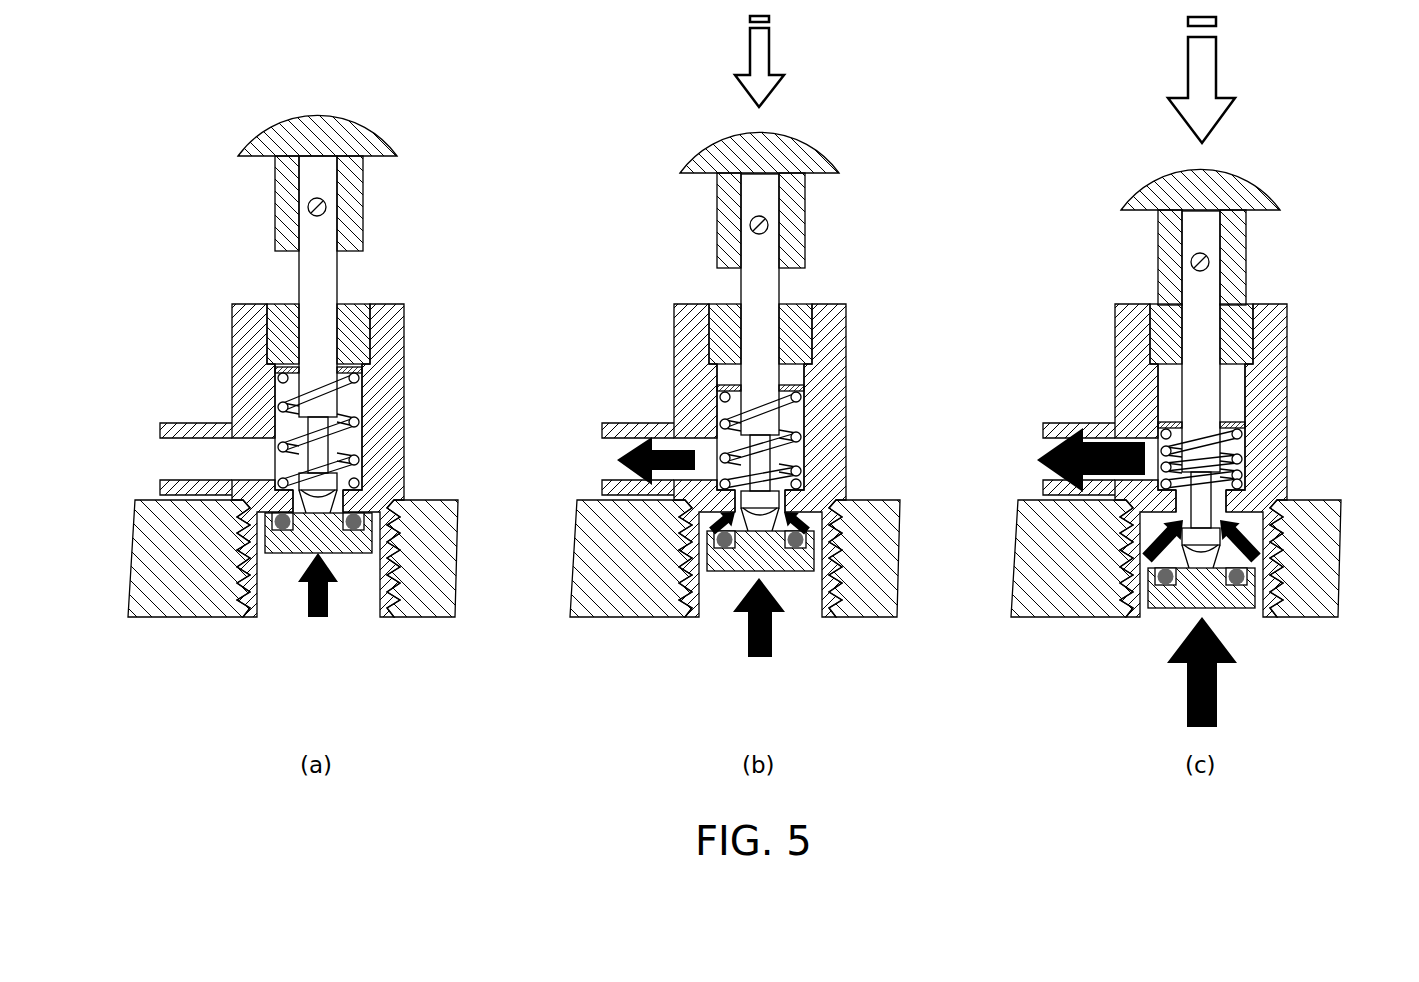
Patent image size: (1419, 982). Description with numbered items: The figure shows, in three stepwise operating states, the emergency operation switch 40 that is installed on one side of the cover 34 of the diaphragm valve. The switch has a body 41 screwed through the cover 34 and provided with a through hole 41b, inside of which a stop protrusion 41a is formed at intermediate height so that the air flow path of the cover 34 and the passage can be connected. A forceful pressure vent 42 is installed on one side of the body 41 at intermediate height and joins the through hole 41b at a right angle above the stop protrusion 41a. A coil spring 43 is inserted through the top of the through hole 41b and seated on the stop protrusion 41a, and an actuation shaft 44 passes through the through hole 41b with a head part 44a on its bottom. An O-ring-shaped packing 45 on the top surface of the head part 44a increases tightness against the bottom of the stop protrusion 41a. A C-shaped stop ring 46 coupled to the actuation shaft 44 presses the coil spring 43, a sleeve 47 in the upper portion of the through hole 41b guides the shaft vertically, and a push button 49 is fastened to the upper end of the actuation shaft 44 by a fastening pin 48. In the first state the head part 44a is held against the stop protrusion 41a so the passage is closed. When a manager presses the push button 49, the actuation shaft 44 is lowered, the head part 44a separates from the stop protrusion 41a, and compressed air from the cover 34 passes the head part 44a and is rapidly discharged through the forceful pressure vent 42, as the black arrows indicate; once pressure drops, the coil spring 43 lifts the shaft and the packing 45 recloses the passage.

The cover 34 is at (448, 565).
The emergency operation switch 40 is at (200, 175).
The body 41 is at (247, 323).
The stop protrusion 41a is at (352, 503).
The through hole 41b is at (350, 400).
The forceful pressure vent 42 is at (177, 458).
The coil spring 43 is at (288, 397).
The actuation shaft 44 is at (338, 275).
The head part 44a is at (356, 547).
The O-ring-shaped packing 45 is at (286, 533).
The C-shaped stop ring 46 is at (352, 367).
The sleeve 47 is at (360, 328).
The fastening pin 48 is at (327, 204).
The push button 49 is at (350, 118).